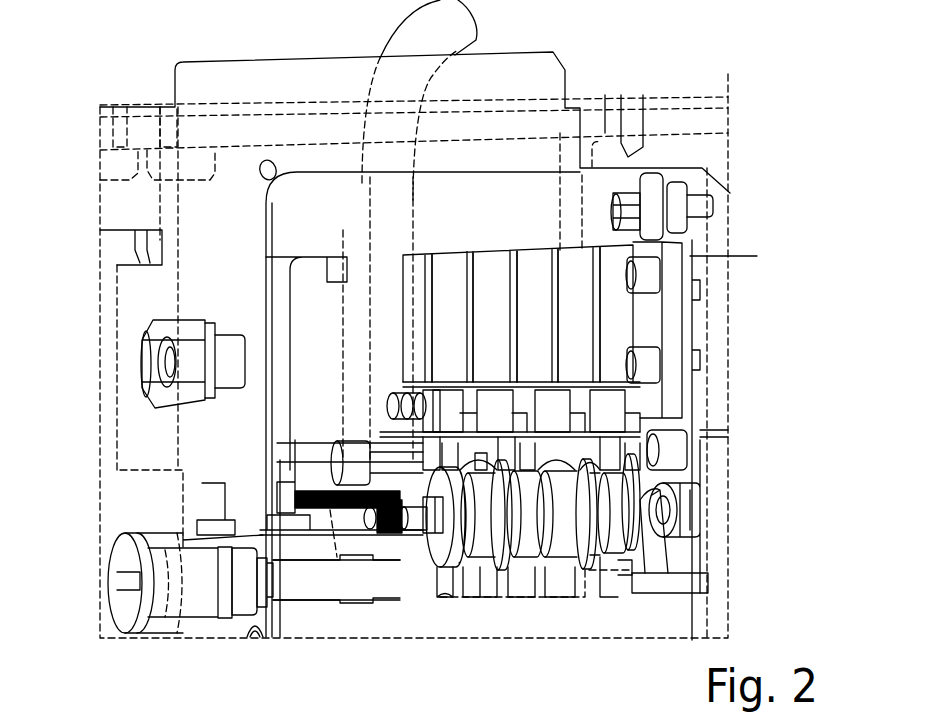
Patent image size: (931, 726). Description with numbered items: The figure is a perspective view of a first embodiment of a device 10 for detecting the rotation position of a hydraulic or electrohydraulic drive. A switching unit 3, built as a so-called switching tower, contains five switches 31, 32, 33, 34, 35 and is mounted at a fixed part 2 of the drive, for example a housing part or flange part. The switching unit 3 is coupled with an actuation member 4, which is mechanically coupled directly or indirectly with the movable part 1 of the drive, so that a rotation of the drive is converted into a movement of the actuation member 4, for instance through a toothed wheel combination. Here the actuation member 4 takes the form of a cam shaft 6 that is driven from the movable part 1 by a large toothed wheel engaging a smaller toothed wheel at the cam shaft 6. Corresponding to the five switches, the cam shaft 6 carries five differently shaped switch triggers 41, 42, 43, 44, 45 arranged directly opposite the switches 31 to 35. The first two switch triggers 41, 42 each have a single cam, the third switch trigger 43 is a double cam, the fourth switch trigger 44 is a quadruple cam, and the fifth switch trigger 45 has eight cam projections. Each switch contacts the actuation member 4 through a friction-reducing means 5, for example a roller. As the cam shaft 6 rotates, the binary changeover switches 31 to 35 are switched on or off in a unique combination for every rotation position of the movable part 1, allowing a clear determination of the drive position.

The device for position detection 10 is at (632, 82).
The movable part 1 is at (653, 563).
The fixed part 2 is at (675, 407).
The switching unit 3 is at (590, 341).
The actuation member 4 is at (432, 560).
The friction-reducing means 5 is at (443, 447).
The cam shaft 6 is at (695, 550).
The first switch 31 is at (468, 318).
The second switch 32 is at (508, 318).
The third switch 33 is at (550, 318).
The fourth switch 34 is at (594, 318).
The fifth switch 35 is at (640, 333).
The first switch trigger 41 is at (443, 572).
The second switch trigger 42 is at (497, 562).
The third switch trigger 43 is at (533, 562).
The fourth switch trigger 44 is at (582, 562).
The fifth switch trigger 45 is at (622, 562).